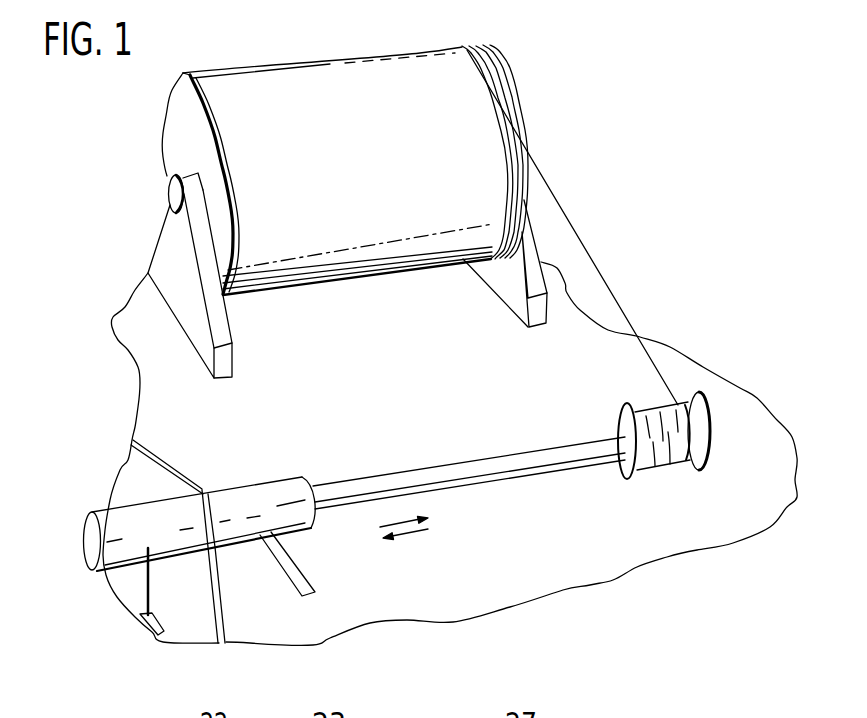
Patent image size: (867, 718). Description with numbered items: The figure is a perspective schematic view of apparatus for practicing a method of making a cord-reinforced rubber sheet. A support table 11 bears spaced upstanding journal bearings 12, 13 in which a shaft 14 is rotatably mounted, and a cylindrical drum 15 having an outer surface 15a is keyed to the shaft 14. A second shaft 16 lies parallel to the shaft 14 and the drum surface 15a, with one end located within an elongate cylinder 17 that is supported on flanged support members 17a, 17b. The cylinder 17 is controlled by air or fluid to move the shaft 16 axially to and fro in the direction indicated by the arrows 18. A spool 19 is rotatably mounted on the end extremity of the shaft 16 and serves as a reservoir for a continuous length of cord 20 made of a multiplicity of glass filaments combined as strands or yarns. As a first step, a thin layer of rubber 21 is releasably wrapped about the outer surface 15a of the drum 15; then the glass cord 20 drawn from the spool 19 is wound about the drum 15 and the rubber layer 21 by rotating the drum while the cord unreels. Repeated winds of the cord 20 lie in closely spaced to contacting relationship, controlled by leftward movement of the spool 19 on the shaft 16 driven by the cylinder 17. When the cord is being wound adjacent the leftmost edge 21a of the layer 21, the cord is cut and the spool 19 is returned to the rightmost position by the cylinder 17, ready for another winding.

The support table 11 is at (516, 571).
The journal bearing 12 is at (162, 243).
The journal bearing 13 is at (506, 289).
The shaft 14 is at (179, 171).
The cylindrical drum 15 is at (168, 97).
The outer surface 15a is at (192, 73).
The shaft 16 is at (420, 474).
The elongate cylinder 17 is at (114, 518).
The flanged support member 17a is at (143, 614).
The flanged support member 17b is at (305, 570).
The arrows 18 is at (417, 534).
The spool 19 is at (623, 464).
The cord 20 is at (680, 406).
The layer of rubber 21 is at (380, 184).
The leftmost edge 21a is at (213, 95).